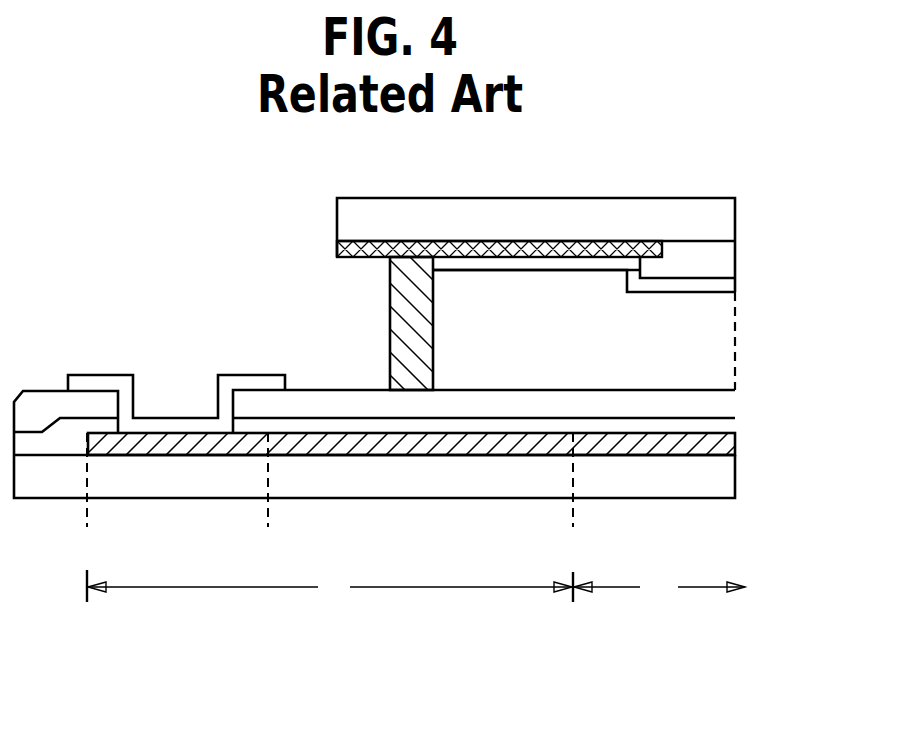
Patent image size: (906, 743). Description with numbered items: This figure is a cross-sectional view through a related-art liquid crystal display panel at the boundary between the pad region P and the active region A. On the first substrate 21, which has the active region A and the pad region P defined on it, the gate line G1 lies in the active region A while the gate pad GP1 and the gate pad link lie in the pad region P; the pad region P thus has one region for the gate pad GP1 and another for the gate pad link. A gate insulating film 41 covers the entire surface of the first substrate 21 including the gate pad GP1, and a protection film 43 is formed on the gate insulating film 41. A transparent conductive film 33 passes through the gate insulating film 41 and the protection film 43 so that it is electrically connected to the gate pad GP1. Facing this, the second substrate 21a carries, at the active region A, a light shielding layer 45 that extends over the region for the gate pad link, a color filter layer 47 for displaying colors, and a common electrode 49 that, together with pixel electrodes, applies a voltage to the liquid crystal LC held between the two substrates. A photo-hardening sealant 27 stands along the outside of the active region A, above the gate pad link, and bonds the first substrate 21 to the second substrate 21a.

The first substrate 21 is at (735, 470).
The second substrate 21a is at (735, 209).
The photo-hardening sealant 27 is at (392, 318).
The transparent conductive film 33 is at (116, 375).
The gate insulating film 41 is at (735, 426).
The protection film 43 is at (735, 397).
The light shielding layer 45 is at (337, 246).
The color filter layer 47 is at (735, 251).
The common electrode 49 is at (735, 278).
The liquid crystal LC is at (735, 334).
The gate pad GP1 is at (172, 455).
The gate line G1 is at (661, 455).
The pad region P is at (329, 586).
The active region A is at (659, 587).